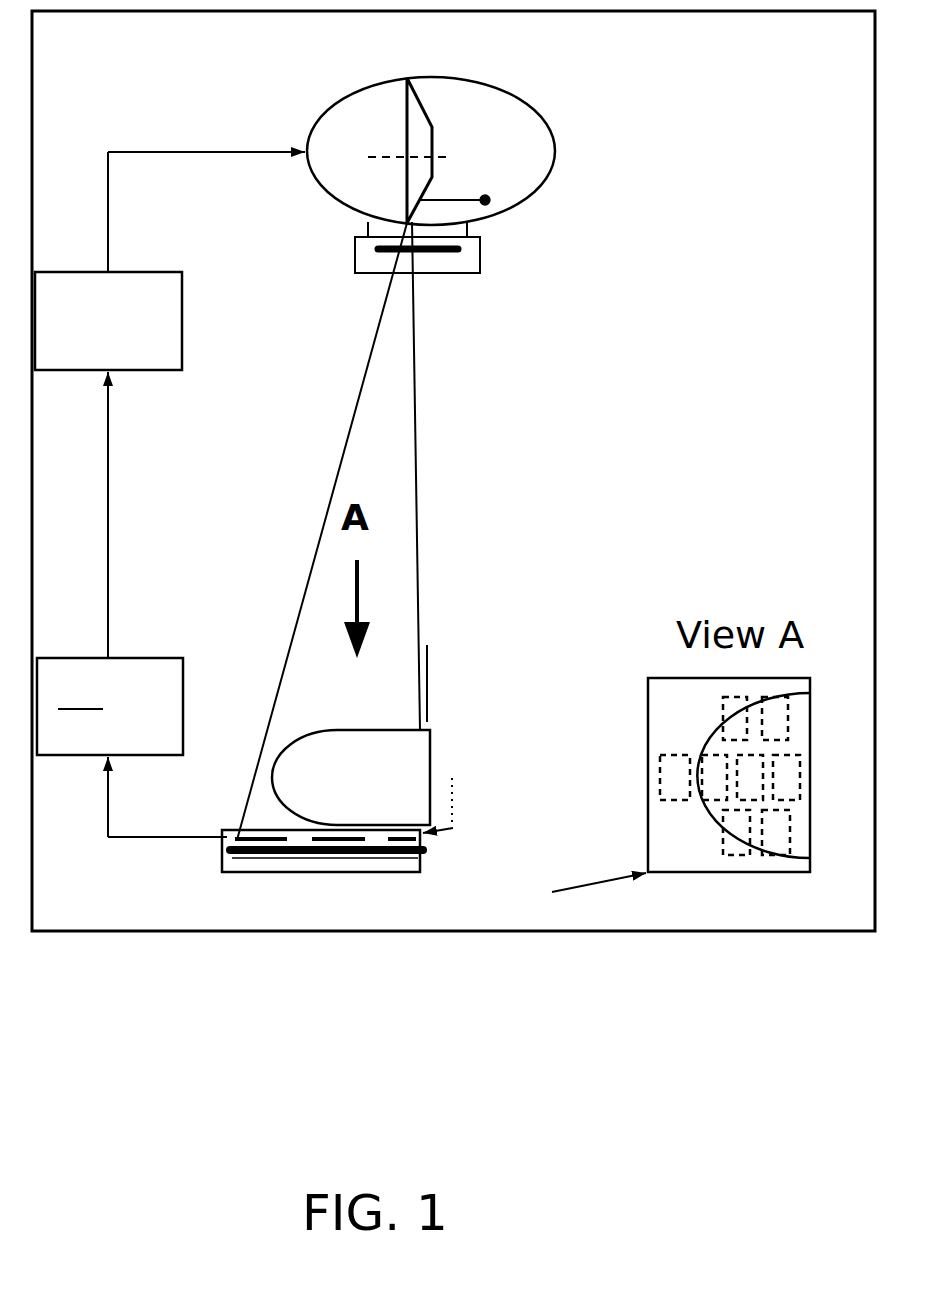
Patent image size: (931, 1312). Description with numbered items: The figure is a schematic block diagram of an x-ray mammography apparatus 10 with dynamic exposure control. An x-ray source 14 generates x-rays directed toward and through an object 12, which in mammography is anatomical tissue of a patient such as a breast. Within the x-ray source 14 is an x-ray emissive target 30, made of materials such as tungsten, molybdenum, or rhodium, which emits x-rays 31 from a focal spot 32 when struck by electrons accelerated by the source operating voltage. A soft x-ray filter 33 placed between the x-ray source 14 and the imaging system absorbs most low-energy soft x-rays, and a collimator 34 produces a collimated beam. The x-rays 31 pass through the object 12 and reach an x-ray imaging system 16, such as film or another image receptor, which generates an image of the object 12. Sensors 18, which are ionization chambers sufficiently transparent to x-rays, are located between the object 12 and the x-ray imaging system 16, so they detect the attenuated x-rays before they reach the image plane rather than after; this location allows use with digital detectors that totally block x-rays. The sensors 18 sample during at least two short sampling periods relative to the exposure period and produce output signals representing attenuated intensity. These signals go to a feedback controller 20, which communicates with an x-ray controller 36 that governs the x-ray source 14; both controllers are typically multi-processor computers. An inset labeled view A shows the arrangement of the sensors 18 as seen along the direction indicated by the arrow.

The x-ray apparatus 10 is at (348, 940).
The object 12 is at (708, 745).
The x-ray source 14 is at (501, 112).
The x-ray imaging system 16 is at (369, 857).
The sensors 18 is at (723, 830).
The feedback controller 20 is at (132, 604).
The x-ray emissive target 30 is at (410, 135).
The x-rays 31 is at (411, 446).
The focal spot 32 is at (507, 199).
The soft x-ray filter 33 is at (467, 249).
The collimator 34 is at (452, 273).
The x-ray controller 36 is at (170, 261).